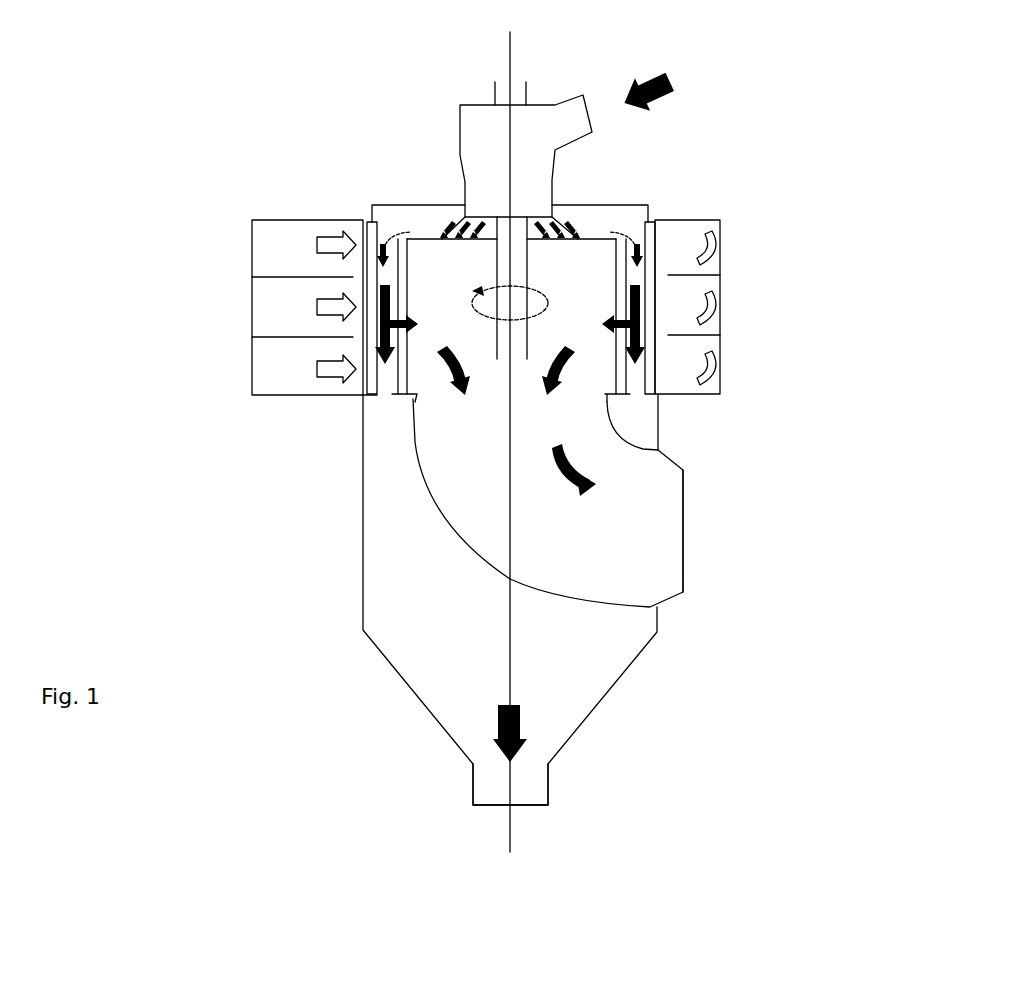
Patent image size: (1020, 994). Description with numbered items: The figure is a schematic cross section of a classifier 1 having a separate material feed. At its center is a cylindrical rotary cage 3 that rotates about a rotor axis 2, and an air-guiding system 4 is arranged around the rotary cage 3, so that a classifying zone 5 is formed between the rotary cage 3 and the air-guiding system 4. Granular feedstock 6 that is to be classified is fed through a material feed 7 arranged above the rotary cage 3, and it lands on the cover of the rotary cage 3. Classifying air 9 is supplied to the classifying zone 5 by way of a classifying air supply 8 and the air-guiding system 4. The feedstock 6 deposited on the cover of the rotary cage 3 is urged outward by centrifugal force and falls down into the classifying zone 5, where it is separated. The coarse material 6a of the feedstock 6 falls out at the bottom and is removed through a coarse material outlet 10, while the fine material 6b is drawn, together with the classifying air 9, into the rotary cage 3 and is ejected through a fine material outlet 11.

The classifier 1 is at (780, 242).
The rotor axis 2 is at (510, 278).
The rotary cage 3 is at (623, 372).
The air-guiding system 4 is at (365, 220).
The classifying zone 5 is at (383, 269).
The feedstock 6 is at (667, 75).
The coarse material 6a is at (520, 732).
The fine material 6b is at (567, 453).
The material feed 7 is at (558, 115).
The classifying air supply 8 is at (268, 243).
The classifying air 9 is at (325, 307).
The coarse material outlet 10 is at (483, 804).
The fine material outlet 11 is at (683, 528).